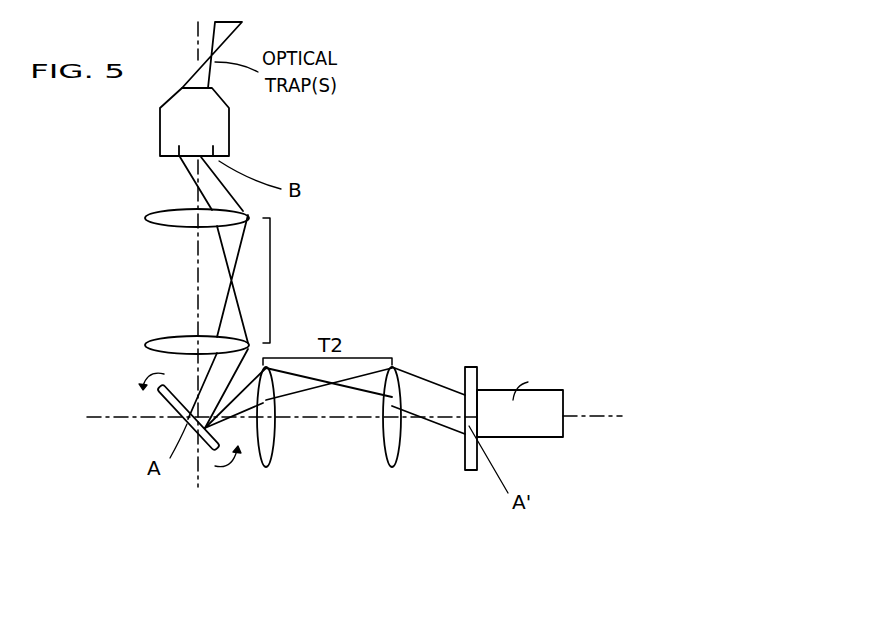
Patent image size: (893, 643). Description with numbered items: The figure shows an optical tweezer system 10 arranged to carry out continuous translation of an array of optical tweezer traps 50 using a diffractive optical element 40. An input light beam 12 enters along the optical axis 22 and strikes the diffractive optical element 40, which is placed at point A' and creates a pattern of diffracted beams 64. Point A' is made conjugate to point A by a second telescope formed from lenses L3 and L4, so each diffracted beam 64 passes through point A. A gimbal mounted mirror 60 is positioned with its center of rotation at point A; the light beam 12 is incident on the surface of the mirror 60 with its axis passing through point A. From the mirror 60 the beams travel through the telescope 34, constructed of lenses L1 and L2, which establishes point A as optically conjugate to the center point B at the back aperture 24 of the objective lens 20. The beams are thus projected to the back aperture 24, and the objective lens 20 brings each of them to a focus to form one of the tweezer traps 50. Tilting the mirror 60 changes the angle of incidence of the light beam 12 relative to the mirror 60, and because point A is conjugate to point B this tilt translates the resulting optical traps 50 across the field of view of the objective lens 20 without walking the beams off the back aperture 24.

The optical tweezer system 10 is at (488, 260).
The light beam 12 is at (525, 438).
The objective lens 20 is at (218, 122).
The optical axis 22 is at (200, 491).
The back aperture 24 is at (213, 156).
The telescope 34 is at (270, 246).
The diffractive optical element 40 is at (477, 375).
The optical tweezer trap 50 is at (213, 55).
The gimbal mounted mirror 60 is at (160, 396).
The diffracted beams 64 is at (430, 421).
The lens L1 is at (185, 345).
The lens L2 is at (182, 218).
The lens L3 is at (396, 434).
The lens L4 is at (269, 434).